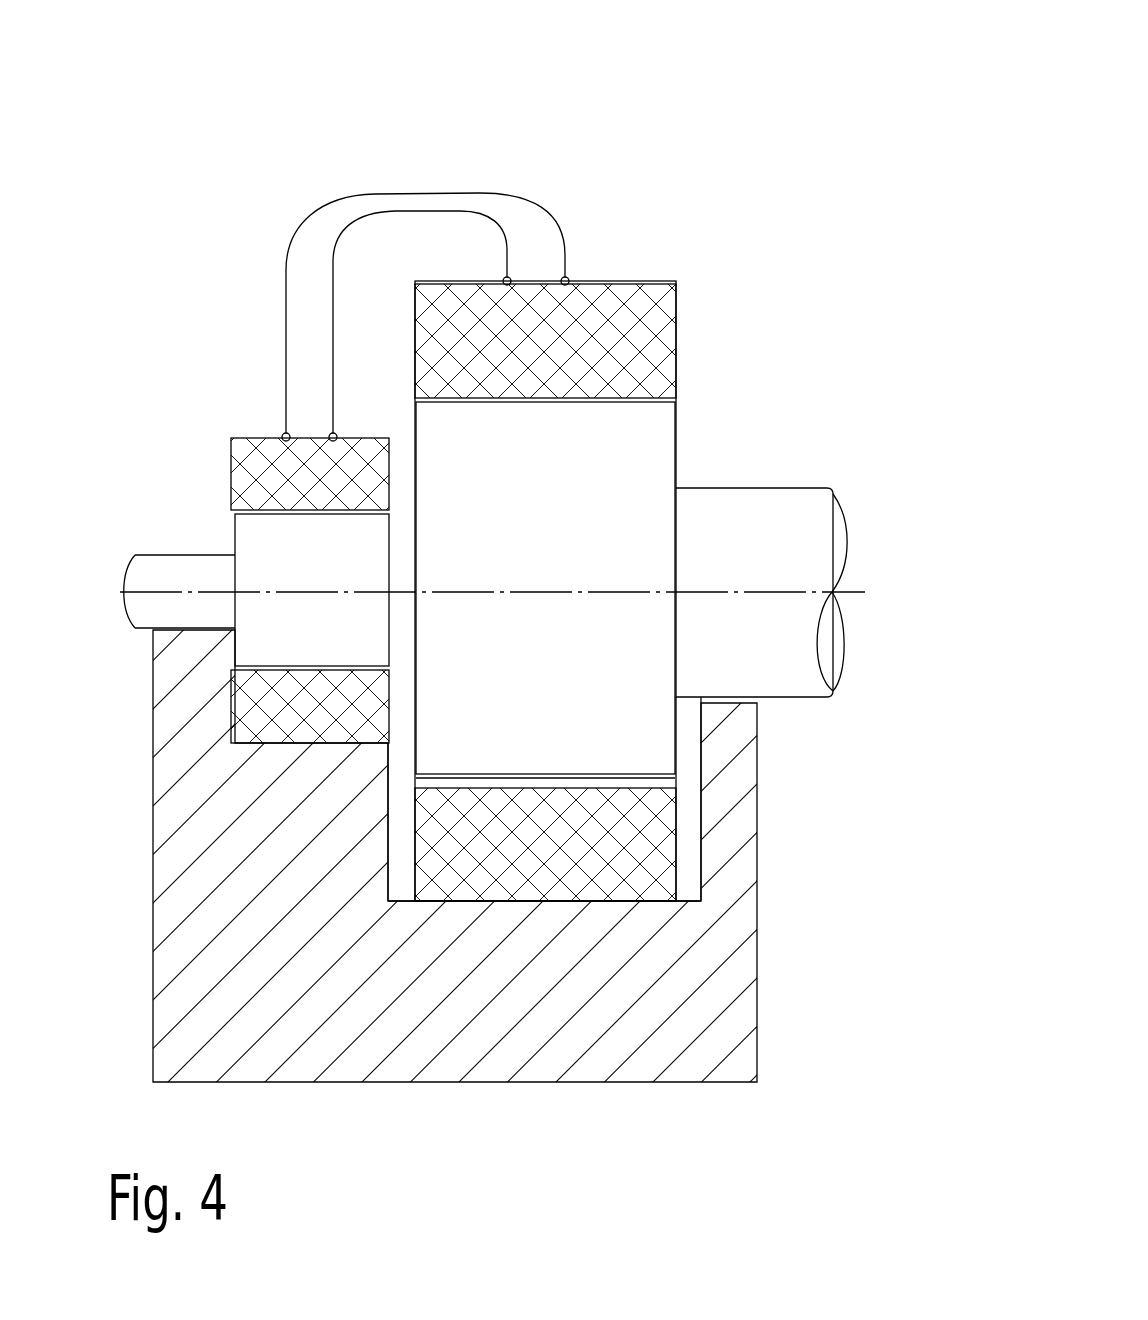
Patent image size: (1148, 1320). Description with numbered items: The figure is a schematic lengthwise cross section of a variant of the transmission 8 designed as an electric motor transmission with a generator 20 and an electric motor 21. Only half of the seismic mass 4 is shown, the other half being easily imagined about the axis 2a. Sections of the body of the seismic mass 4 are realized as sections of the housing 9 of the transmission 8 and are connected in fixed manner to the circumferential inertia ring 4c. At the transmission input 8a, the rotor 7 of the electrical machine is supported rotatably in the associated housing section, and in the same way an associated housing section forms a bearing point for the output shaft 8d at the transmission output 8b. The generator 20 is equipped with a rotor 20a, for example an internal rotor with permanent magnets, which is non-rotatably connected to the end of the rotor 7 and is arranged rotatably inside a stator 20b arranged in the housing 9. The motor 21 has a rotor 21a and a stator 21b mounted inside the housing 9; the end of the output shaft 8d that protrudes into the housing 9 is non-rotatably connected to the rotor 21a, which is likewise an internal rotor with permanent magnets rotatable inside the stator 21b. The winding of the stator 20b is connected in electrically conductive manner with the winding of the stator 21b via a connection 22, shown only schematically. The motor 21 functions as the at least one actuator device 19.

The axis of rotation 2a is at (852, 587).
The seismic mass 4 is at (700, 1080).
The inertia ring 4c is at (493, 1032).
The rotor 7 is at (150, 603).
The transmission 8 is at (413, 98).
The transmission input 8a is at (182, 463).
The transmission output 8b is at (767, 438).
The output shaft 8d is at (795, 505).
The housing 9 is at (207, 714).
The actuator device 19 is at (613, 498).
The generator 20 is at (234, 566).
The rotor 20a is at (255, 540).
The stator 20b is at (273, 450).
The electric motor 21 is at (613, 498).
The rotor 21a is at (647, 442).
The stator 21b is at (640, 332).
The connection 22 is at (377, 223).